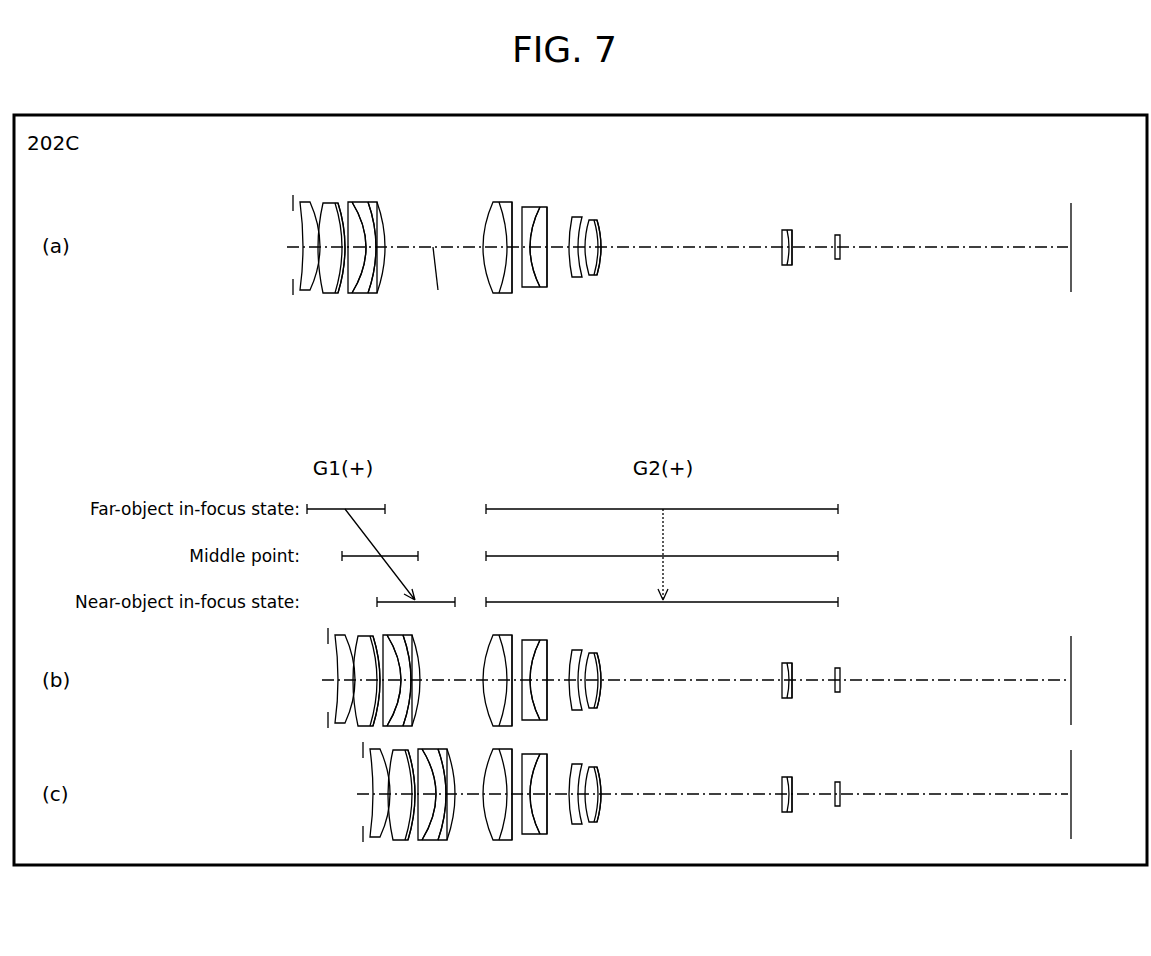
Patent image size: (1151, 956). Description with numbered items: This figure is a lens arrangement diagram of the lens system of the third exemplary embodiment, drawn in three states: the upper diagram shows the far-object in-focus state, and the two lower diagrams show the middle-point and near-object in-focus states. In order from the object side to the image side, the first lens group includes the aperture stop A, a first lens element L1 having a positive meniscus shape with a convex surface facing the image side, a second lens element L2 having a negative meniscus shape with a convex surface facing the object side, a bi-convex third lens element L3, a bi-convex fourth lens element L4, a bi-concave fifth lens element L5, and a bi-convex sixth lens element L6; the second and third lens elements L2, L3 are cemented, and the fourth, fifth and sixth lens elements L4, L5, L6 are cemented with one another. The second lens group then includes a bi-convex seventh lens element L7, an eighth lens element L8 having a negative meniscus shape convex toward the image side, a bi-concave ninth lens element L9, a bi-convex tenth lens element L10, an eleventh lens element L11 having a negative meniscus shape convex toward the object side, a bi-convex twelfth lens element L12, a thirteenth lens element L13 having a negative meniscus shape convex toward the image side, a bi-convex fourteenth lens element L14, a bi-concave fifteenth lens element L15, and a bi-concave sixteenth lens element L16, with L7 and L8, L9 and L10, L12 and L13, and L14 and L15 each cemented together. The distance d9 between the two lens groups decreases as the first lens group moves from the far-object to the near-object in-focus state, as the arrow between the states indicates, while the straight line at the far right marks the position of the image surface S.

The aperture stop A is at (295, 207).
The first lens element L1 is at (303, 205).
The second lens element L2 is at (327, 202).
The third lens element L3 is at (340, 202).
The fourth lens element L4 is at (357, 202).
The fifth lens element L5 is at (368, 205).
The sixth lens element L6 is at (378, 225).
The seventh lens element L7 is at (493, 203).
The eighth lens element L8 is at (508, 202).
The ninth lens element L9 is at (532, 208).
The tenth lens element L10 is at (543, 208).
The eleventh lens element L11 is at (583, 218).
The twelfth lens element L12 is at (592, 222).
The thirteenth lens element L13 is at (598, 227).
The fourteenth lens element L14 is at (785, 235).
The fifteenth lens element L15 is at (790, 235).
The sixteenth lens element L16 is at (837, 235).
The distance d9 is at (439, 285).
The image surface S is at (1071, 228).